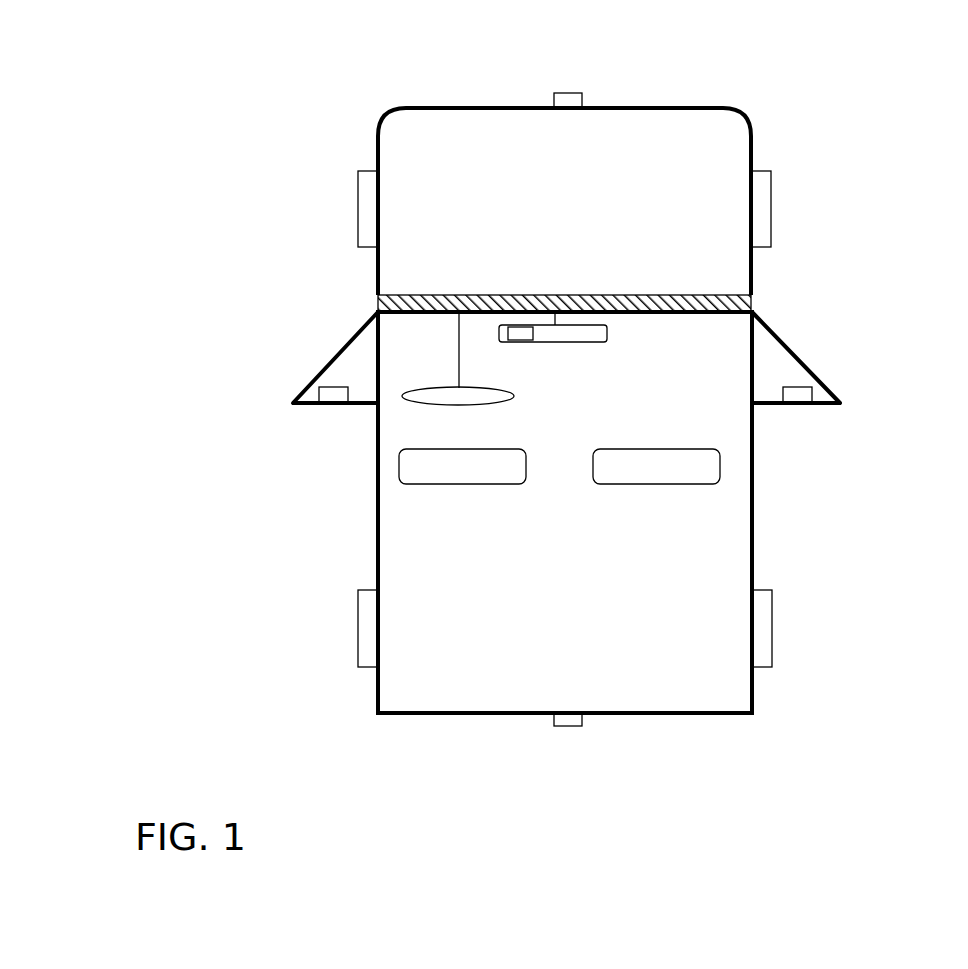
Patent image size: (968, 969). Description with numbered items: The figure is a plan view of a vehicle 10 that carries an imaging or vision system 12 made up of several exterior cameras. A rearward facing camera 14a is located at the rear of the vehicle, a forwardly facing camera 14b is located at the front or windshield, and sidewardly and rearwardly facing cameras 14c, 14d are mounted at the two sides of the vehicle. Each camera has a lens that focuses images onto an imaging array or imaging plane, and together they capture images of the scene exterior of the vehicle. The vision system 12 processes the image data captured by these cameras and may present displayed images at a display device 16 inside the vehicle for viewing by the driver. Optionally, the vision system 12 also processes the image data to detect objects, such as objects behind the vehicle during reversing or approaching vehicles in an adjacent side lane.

The vehicle 10 is at (298, 123).
The vision system 12 is at (517, 745).
The rearward facing camera 14a is at (570, 723).
The forwardly facing camera 14b is at (567, 92).
The sidewardly/rearwardly facing camera 14c is at (332, 394).
The sidewardly/rearwardly facing camera 14d is at (798, 395).
The display device 16 is at (522, 334).